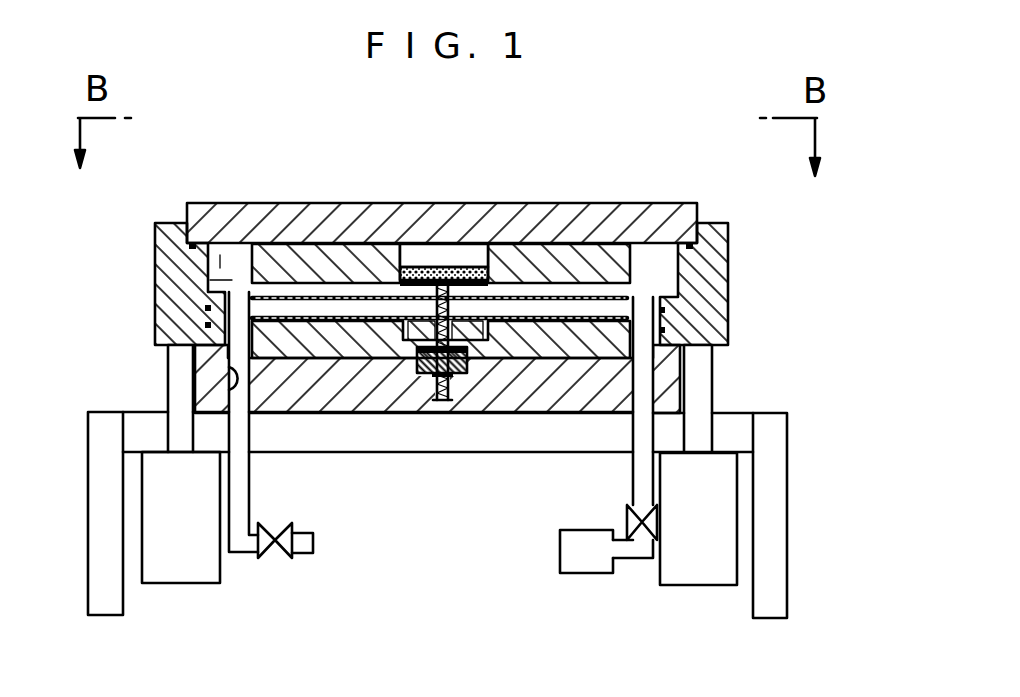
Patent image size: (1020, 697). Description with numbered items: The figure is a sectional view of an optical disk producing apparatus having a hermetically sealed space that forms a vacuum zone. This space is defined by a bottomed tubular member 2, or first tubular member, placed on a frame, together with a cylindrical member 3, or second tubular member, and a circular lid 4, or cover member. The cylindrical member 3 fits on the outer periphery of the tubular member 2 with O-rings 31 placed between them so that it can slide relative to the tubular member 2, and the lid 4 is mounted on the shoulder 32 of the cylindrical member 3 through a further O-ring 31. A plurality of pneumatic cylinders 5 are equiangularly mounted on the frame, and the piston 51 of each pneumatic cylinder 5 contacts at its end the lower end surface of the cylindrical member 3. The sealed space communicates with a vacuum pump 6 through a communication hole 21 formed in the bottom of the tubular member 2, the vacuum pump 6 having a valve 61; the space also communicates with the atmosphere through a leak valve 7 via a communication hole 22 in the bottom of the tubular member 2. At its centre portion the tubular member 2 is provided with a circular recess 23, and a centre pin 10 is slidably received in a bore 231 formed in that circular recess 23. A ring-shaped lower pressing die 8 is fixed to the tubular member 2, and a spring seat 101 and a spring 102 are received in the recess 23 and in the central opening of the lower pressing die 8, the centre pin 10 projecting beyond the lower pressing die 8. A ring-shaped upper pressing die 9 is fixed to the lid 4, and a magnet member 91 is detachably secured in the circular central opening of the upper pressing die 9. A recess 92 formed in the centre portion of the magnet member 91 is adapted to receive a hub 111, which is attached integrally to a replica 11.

The bottomed tubular member 2 is at (331, 397).
The cylindrical member 3 is at (742, 257).
The circular lid 4 is at (584, 201).
The pneumatic cylinders 5 is at (178, 585).
The vacuum pump 6 is at (600, 575).
The leak valve 7 is at (285, 560).
The lower pressing die 8 is at (302, 339).
The upper pressing die 9 is at (304, 266).
The centre pin 10 is at (445, 267).
The replica 11 is at (590, 316).
The communication hole 21 is at (678, 365).
The communication hole 22 is at (229, 370).
The circular recess 23 is at (468, 362).
The O-rings 31 is at (193, 204).
The shoulder 32 is at (690, 206).
The piston 51 is at (167, 380).
The valve 61 is at (630, 518).
The magnet member 91 is at (410, 267).
The recess 92 is at (422, 270).
The spring seat 101 is at (420, 362).
The spring 102 is at (436, 392).
The hub 111 is at (497, 293).
The bore 231 is at (455, 395).